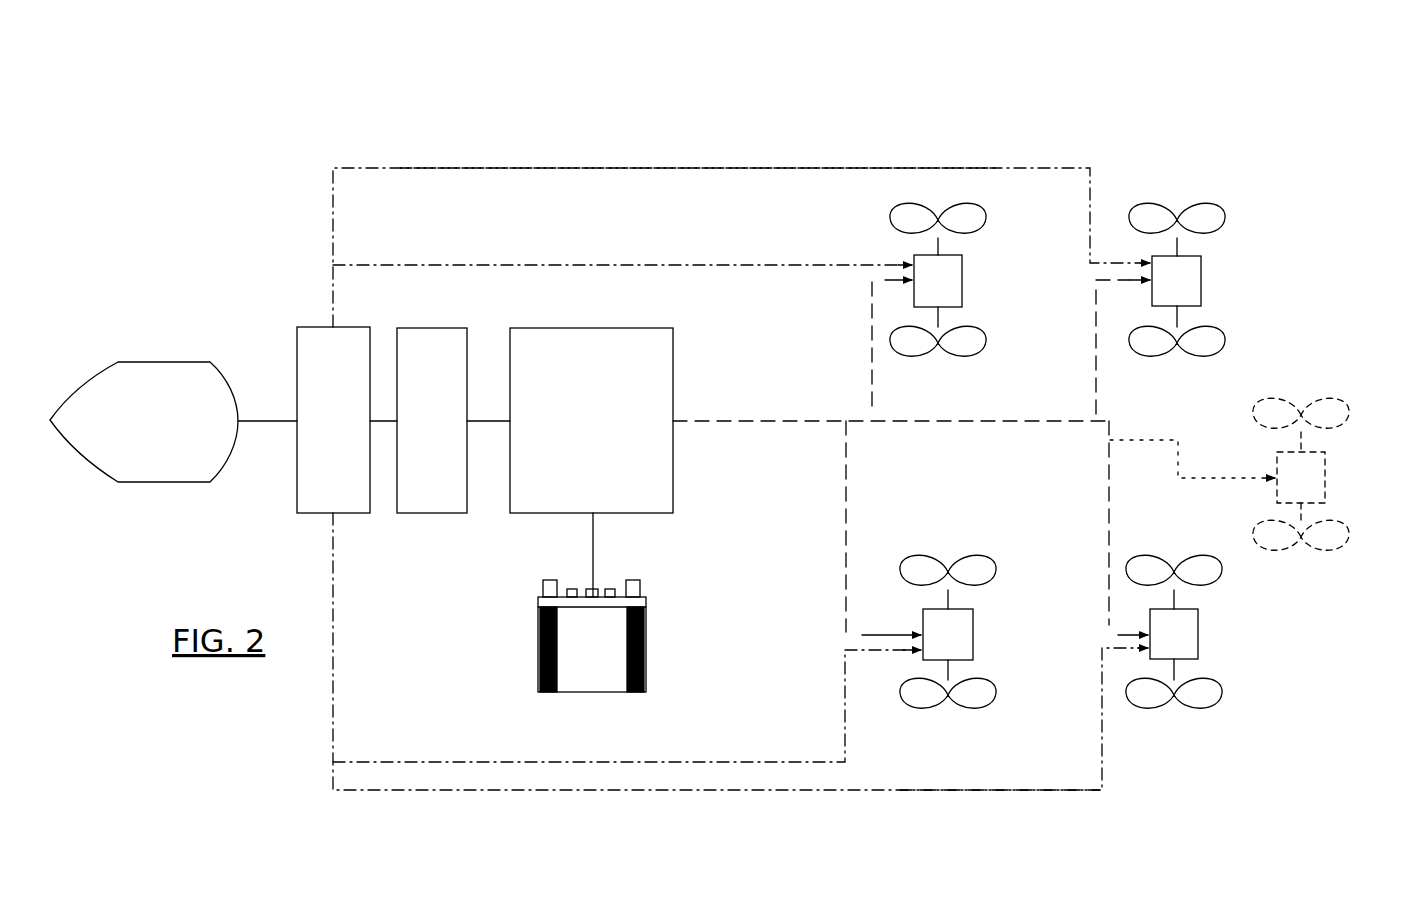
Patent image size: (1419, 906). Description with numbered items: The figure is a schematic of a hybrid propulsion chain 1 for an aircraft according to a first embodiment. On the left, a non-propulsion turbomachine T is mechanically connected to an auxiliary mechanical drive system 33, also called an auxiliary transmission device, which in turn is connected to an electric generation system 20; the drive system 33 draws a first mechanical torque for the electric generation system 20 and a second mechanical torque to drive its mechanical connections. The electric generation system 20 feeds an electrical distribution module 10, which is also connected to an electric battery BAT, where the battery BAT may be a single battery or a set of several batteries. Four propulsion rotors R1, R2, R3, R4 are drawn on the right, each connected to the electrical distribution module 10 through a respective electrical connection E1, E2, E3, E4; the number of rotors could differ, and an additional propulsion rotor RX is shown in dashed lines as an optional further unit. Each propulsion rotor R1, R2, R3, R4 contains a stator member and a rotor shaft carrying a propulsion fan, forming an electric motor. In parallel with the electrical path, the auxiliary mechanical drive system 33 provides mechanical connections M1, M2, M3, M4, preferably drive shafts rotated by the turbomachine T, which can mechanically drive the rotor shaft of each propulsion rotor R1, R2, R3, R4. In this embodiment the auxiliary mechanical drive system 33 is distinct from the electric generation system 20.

The hybrid propulsion chain 1 is at (377, 105).
The non-propulsion turbomachine T is at (173, 422).
The auxiliary mechanical drive system 33 is at (347, 420).
The electric generation system 20 is at (453, 420).
The electrical distribution module 10 is at (591, 462).
The electric battery BAT is at (537, 652).
The first mechanical connection M1 is at (698, 263).
The second mechanical connection M2 is at (745, 762).
The third mechanical connection M3 is at (742, 166).
The fourth mechanical connection M4 is at (1024, 788).
The first electrical connection E1 is at (870, 330).
The second electrical connection E2 is at (845, 548).
The third electrical connection E3 is at (1097, 344).
The fourth electrical connection E4 is at (1107, 525).
The first propulsion rotor R1 is at (988, 318).
The second propulsion rotor R2 is at (1003, 645).
The third propulsion rotor R3 is at (1237, 288).
The fourth propulsion rotor R4 is at (1212, 625).
The additional propulsion rotor RX is at (1357, 486).